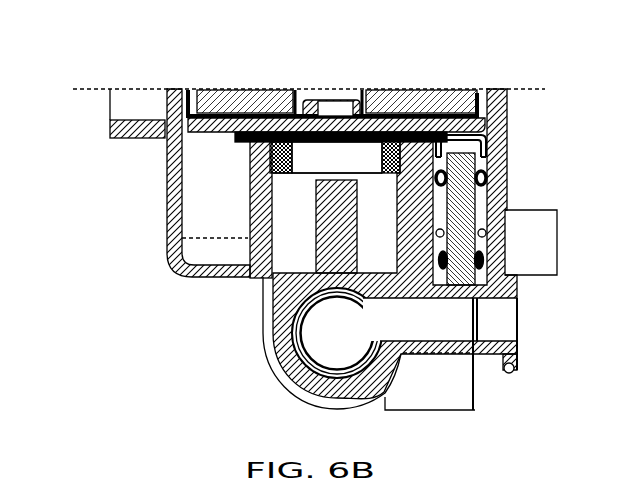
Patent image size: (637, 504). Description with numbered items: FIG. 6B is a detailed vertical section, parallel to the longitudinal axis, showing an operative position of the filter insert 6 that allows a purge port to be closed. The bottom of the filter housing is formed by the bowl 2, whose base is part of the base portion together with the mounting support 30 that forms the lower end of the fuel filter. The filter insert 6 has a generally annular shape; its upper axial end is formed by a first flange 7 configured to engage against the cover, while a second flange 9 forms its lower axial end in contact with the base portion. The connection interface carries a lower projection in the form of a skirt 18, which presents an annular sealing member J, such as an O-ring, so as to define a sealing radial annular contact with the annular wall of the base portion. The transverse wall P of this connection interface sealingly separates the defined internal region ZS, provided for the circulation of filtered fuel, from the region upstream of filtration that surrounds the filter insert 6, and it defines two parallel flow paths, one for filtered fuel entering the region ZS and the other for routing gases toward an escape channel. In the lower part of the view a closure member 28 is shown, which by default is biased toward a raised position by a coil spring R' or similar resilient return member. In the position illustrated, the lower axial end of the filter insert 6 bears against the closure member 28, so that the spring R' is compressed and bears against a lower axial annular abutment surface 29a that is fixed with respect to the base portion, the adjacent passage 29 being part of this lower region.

The bowl 2 is at (128, 139).
The mounting support 30 is at (100, 124).
The filter insert 6 is at (217, 88).
The first flange 7 is at (481, 113).
The second flange 9 is at (207, 132).
The skirt 18 is at (378, 157).
The transverse wall P is at (240, 138).
The annular sealing member J is at (280, 152).
The defined internal region ZS is at (290, 243).
The coil spring R' is at (499, 145).
The lower axial annular abutment surface 29a is at (487, 180).
The closure member 28 is at (480, 217).
The pipe 29 is at (478, 304).